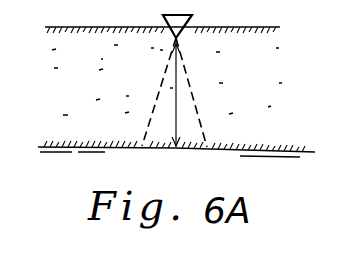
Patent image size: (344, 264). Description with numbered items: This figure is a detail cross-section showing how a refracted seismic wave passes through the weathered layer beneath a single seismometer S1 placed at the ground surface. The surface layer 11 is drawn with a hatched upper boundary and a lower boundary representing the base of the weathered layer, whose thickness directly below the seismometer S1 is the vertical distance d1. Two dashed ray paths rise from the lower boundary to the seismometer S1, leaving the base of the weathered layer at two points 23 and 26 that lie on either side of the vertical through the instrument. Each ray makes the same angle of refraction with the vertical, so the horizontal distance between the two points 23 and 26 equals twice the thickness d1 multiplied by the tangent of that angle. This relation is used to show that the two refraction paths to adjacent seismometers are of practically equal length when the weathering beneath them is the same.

The ground / earth surface 11 is at (131, 65).
The seismometer S1 is at (192, 15).
The point 23 is at (142, 148).
The point 26 is at (207, 148).
The thickness of the weathered layer d1 is at (175, 92).